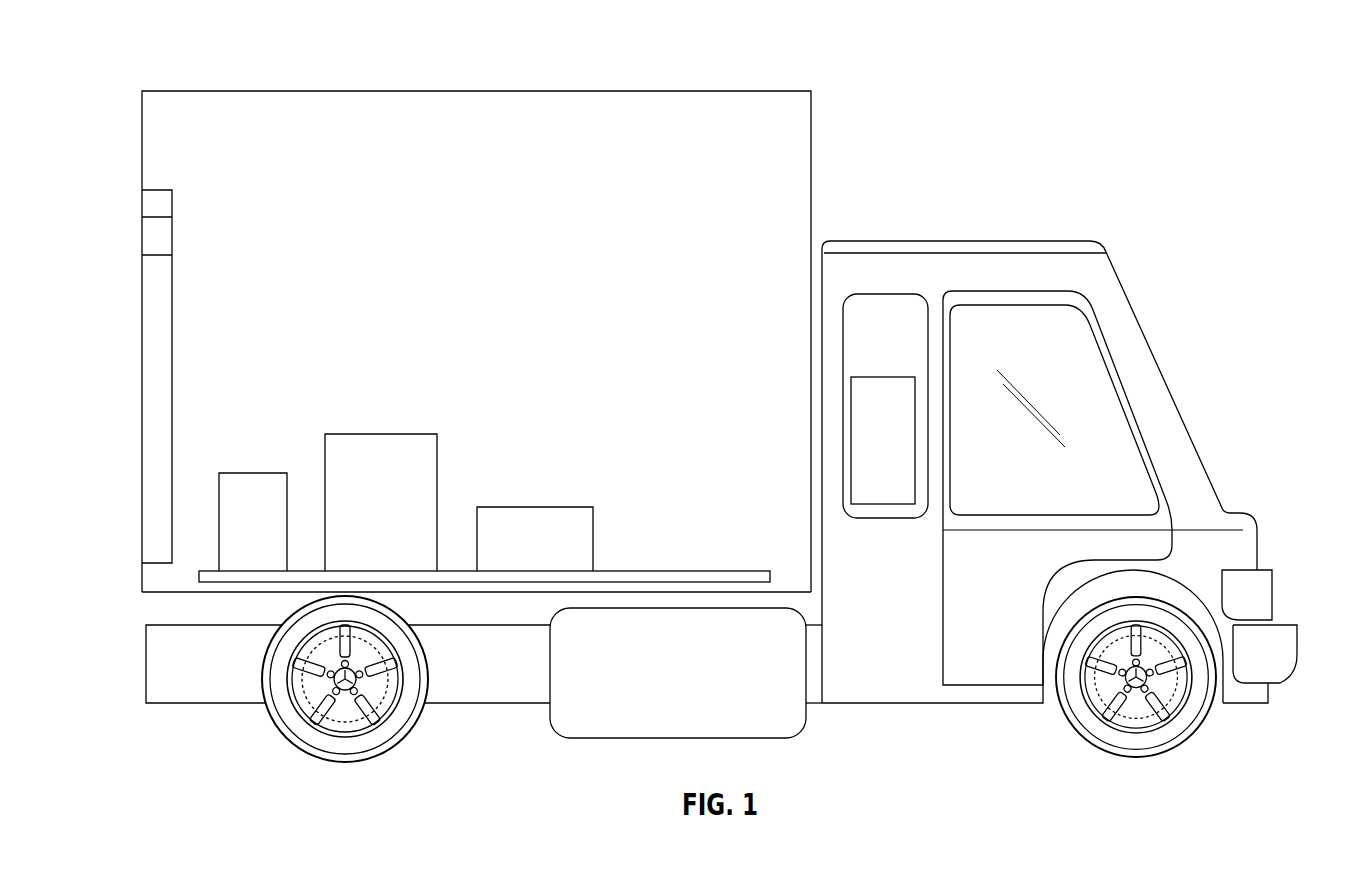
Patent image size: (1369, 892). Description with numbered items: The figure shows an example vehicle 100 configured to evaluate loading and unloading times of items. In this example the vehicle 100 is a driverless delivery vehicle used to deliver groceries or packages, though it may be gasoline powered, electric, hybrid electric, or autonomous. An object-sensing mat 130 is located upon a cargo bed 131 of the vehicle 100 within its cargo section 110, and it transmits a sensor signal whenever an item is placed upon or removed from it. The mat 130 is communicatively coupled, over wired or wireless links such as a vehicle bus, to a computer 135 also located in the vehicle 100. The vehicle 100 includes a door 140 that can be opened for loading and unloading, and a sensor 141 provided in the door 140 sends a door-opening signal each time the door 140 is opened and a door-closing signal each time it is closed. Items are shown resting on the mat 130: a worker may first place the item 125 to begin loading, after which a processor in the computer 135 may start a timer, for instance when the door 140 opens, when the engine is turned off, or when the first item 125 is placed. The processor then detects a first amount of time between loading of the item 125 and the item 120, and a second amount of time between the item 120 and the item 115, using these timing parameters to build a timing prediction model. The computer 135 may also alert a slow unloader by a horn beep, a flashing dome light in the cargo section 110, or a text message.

The vehicle 100 is at (1240, 141).
The cargo section 110 is at (514, 91).
The item 115 is at (246, 473).
The item 120 is at (360, 434).
The item 125 is at (525, 507).
The object-sensing mat 130 is at (694, 560).
The cargo bed 131 is at (794, 578).
The computer 135 is at (863, 377).
The door 140 is at (172, 386).
The sensor 141 is at (193, 229).